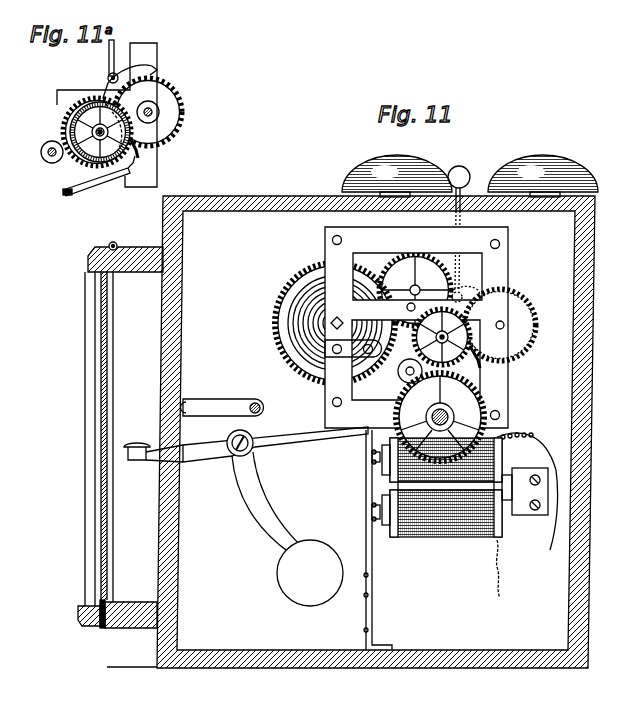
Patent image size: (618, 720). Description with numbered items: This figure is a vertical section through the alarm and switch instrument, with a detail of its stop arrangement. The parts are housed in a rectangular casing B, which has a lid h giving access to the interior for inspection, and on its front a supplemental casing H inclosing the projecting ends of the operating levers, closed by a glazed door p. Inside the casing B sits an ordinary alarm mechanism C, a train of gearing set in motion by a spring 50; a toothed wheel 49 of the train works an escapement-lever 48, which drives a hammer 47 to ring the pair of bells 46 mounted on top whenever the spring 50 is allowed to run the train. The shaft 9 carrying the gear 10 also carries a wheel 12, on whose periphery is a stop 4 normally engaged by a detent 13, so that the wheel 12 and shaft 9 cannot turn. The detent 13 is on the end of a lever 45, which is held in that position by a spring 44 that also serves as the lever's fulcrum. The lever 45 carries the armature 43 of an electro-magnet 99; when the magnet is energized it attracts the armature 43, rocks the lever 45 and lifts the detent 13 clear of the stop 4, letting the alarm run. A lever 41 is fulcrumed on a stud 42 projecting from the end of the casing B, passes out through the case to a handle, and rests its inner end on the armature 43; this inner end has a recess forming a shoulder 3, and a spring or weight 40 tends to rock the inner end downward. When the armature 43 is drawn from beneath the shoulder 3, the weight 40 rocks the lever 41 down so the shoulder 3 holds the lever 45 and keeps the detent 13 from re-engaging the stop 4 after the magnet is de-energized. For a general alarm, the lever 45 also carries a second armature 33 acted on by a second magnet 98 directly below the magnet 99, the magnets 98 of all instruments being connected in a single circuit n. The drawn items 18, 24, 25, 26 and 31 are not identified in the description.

In FIG. 11, the shoulder 3 is at (484, 405).
In FIG. 11a, the stop 4 is at (138, 154).
In FIG. 11, the stop 4 is at (495, 364).
In FIG. 11a, the shaft 9 is at (98, 130).
In FIG. 11a, the gear 10 is at (63, 126).
In FIG. 11a, the wheel 12 is at (80, 160).
In FIG. 11, the wheel 12 is at (458, 352).
In FIG. 11a, the detent 13 is at (118, 176).
In FIG. 11, the terminal block 18 is at (548, 538).
In FIG. 11a, the roller 24 is at (41, 152).
In FIG. 11, the pulley 25 is at (398, 375).
In FIG. 11, the gear wheel 26 is at (400, 392).
In FIG. 11, the arm 31 is at (258, 404).
In FIG. 11, the second armature 33 is at (372, 512).
In FIG. 11, the spring or weight 40 is at (287, 529).
In FIG. 11, the lever 41 is at (275, 444).
In FIG. 11, the stud 42 is at (251, 435).
In FIG. 11, the armature 43 is at (372, 457).
In FIG. 11, the spring 44 is at (372, 620).
In FIG. 11, the lever 45 is at (366, 483).
In FIG. 11, the bell 46 is at (433, 160).
In FIG. 11a, the hammer 47 is at (109, 56).
In FIG. 11, the hammer 47 is at (467, 172).
In FIG. 11a, the escapement-lever 48 is at (147, 66).
In FIG. 11, the escapement-lever 48 is at (482, 286).
In FIG. 11a, the toothed wheel 49 is at (170, 119).
In FIG. 11, the toothed wheel 49 is at (534, 326).
In FIG. 11, the spring 50 is at (320, 380).
In FIG. 11, the second magnet 98 is at (470, 537).
In FIG. 11, the electro-magnet 99 is at (505, 447).
In FIG. 11, the casing B is at (573, 392).
In FIG. 11a, the alarm mechanism C is at (113, 115).
In FIG. 11, the alarm mechanism C is at (510, 276).
In FIG. 11, the supplemental casing H is at (125, 601).
In FIG. 11, the lid h is at (284, 196).
In FIG. 11, the circuit n is at (500, 592).
In FIG. 11, the door p is at (100, 494).